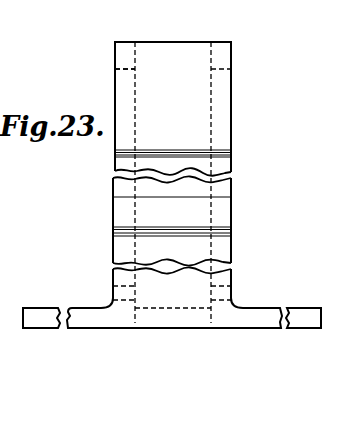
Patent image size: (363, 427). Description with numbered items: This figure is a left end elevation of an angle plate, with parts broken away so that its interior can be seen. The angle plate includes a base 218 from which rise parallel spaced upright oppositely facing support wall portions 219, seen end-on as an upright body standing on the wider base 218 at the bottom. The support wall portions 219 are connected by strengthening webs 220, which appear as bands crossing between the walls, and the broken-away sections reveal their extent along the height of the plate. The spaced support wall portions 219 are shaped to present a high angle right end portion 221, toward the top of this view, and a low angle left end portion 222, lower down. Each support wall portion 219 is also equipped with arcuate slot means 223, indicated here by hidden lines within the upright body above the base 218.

The base 218 is at (52, 308).
The support wall portions 219 is at (128, 58).
The strengthening webs 220 is at (200, 136).
The high angle right end portion 221 is at (218, 42).
The low angle left end portion 222 is at (200, 248).
The arcuate slot means 223 is at (128, 70).